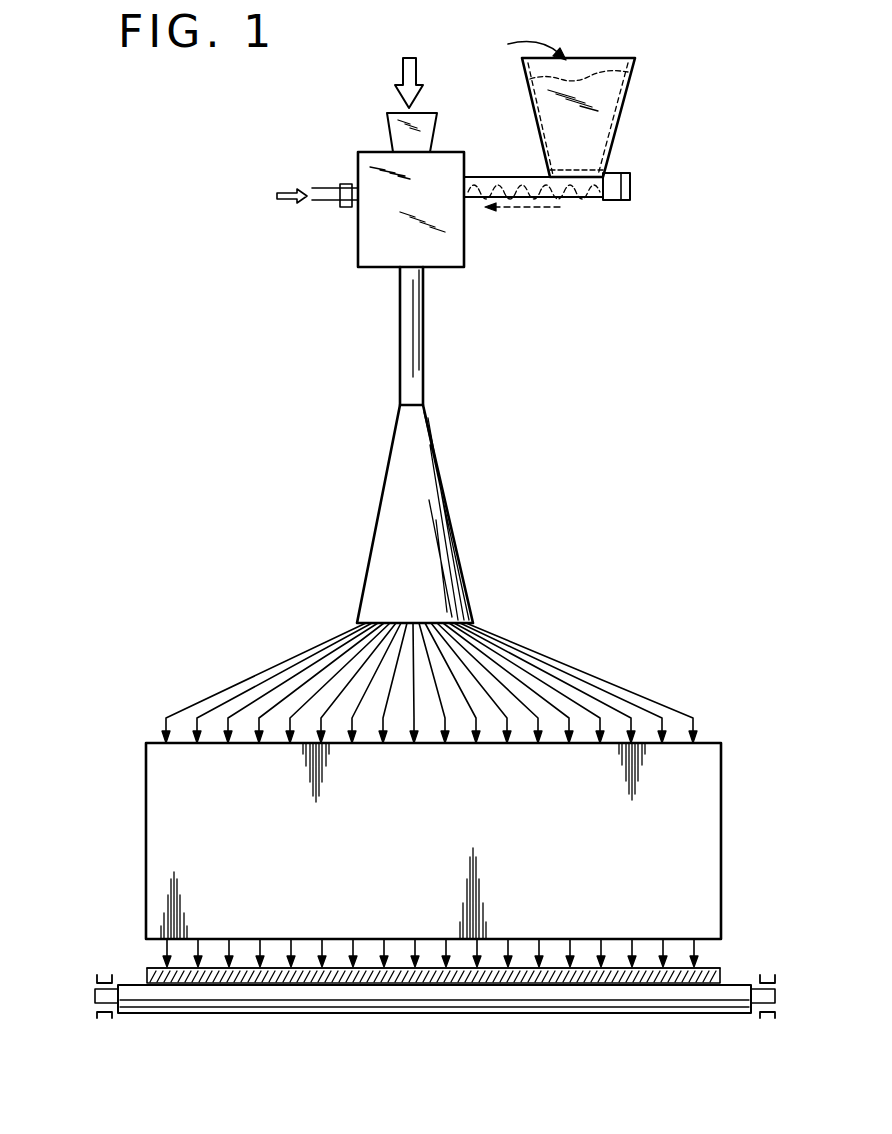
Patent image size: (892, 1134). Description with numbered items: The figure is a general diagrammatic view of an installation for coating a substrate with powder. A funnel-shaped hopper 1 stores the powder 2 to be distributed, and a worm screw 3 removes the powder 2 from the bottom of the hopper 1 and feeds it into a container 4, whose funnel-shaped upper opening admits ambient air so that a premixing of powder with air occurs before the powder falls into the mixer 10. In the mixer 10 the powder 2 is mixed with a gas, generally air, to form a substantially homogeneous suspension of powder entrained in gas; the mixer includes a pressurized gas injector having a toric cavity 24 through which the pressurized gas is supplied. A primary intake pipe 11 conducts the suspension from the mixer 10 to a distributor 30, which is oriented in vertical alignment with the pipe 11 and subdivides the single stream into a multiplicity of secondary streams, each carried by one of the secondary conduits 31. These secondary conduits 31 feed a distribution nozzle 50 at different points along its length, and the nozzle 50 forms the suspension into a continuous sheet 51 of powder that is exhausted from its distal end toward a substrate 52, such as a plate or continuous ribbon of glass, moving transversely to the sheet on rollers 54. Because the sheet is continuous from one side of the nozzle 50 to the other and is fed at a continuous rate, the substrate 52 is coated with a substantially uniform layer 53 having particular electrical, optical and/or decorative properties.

The hopper 1 is at (604, 149).
The powder 2 is at (609, 78).
The worm screw 3 is at (490, 177).
The container 4 is at (393, 128).
The mixer 10 is at (362, 292).
The primary intake pipe 11 is at (400, 357).
The toric cavity 24 is at (327, 188).
The distributor 30 is at (373, 488).
The secondary conduits 31 is at (283, 688).
The distribution nozzle 50 is at (127, 781).
The continuous sheet 51 is at (146, 957).
The substrate 52 is at (256, 984).
The layer 53 is at (713, 968).
The rollers 54 is at (104, 975).